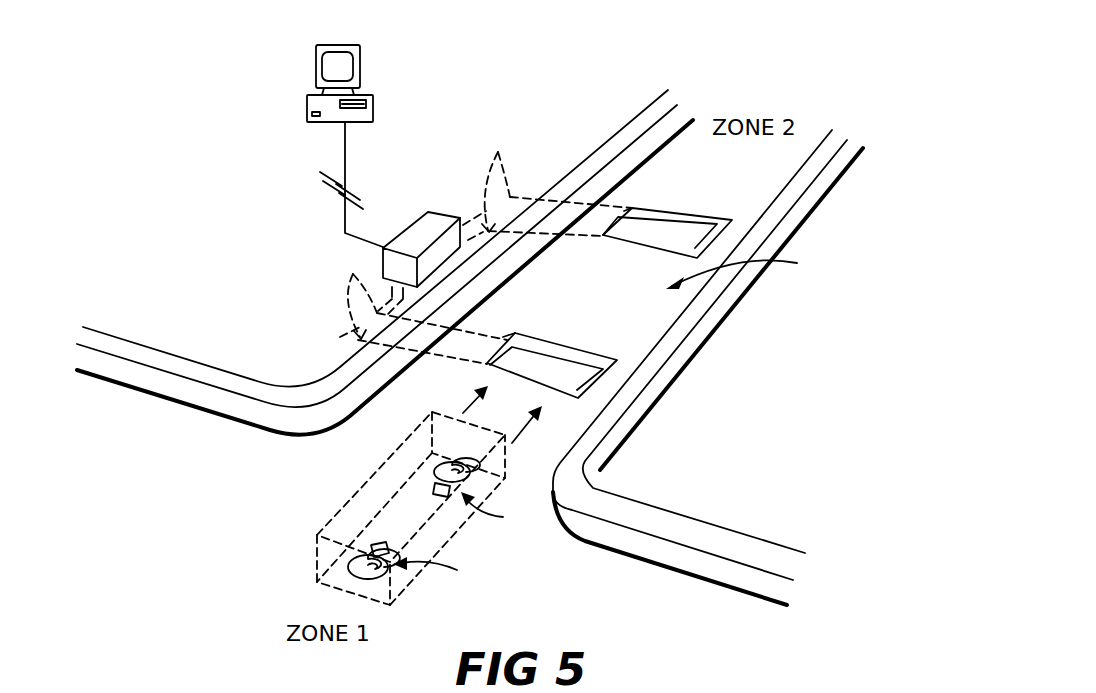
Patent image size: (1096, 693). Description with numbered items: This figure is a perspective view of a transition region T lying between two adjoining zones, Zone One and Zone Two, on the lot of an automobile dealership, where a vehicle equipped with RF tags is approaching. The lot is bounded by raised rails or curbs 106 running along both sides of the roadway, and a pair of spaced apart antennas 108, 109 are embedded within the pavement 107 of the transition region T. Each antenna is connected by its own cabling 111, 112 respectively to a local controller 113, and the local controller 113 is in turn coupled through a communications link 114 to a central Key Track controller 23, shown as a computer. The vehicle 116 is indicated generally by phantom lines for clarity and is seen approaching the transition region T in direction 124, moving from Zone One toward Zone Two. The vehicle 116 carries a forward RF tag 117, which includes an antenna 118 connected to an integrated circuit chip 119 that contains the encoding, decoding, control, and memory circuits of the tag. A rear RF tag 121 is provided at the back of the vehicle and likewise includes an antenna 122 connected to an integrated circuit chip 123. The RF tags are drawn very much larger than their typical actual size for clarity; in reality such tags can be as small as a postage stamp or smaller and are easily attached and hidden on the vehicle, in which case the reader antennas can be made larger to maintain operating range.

The central Key Track controller 23 is at (375, 72).
The conveyor rails 106 is at (625, 126).
The pavement 107 is at (610, 300).
The antenna 108 is at (572, 343).
The antenna 109 is at (658, 210).
The cabling 111 is at (423, 308).
The cabling 112 is at (547, 185).
The local controller 113 is at (420, 237).
The communications link 114 is at (347, 216).
The vehicle 116 is at (333, 500).
The forward RF tag 117 is at (504, 511).
The antenna 118 is at (440, 466).
The integrated circuit chip 119 is at (443, 496).
The rear RF tag 121 is at (443, 570).
The antenna 122 is at (352, 565).
The integrated circuit chip 123 is at (369, 553).
The direction 124 is at (462, 408).
The transition region T is at (740, 274).